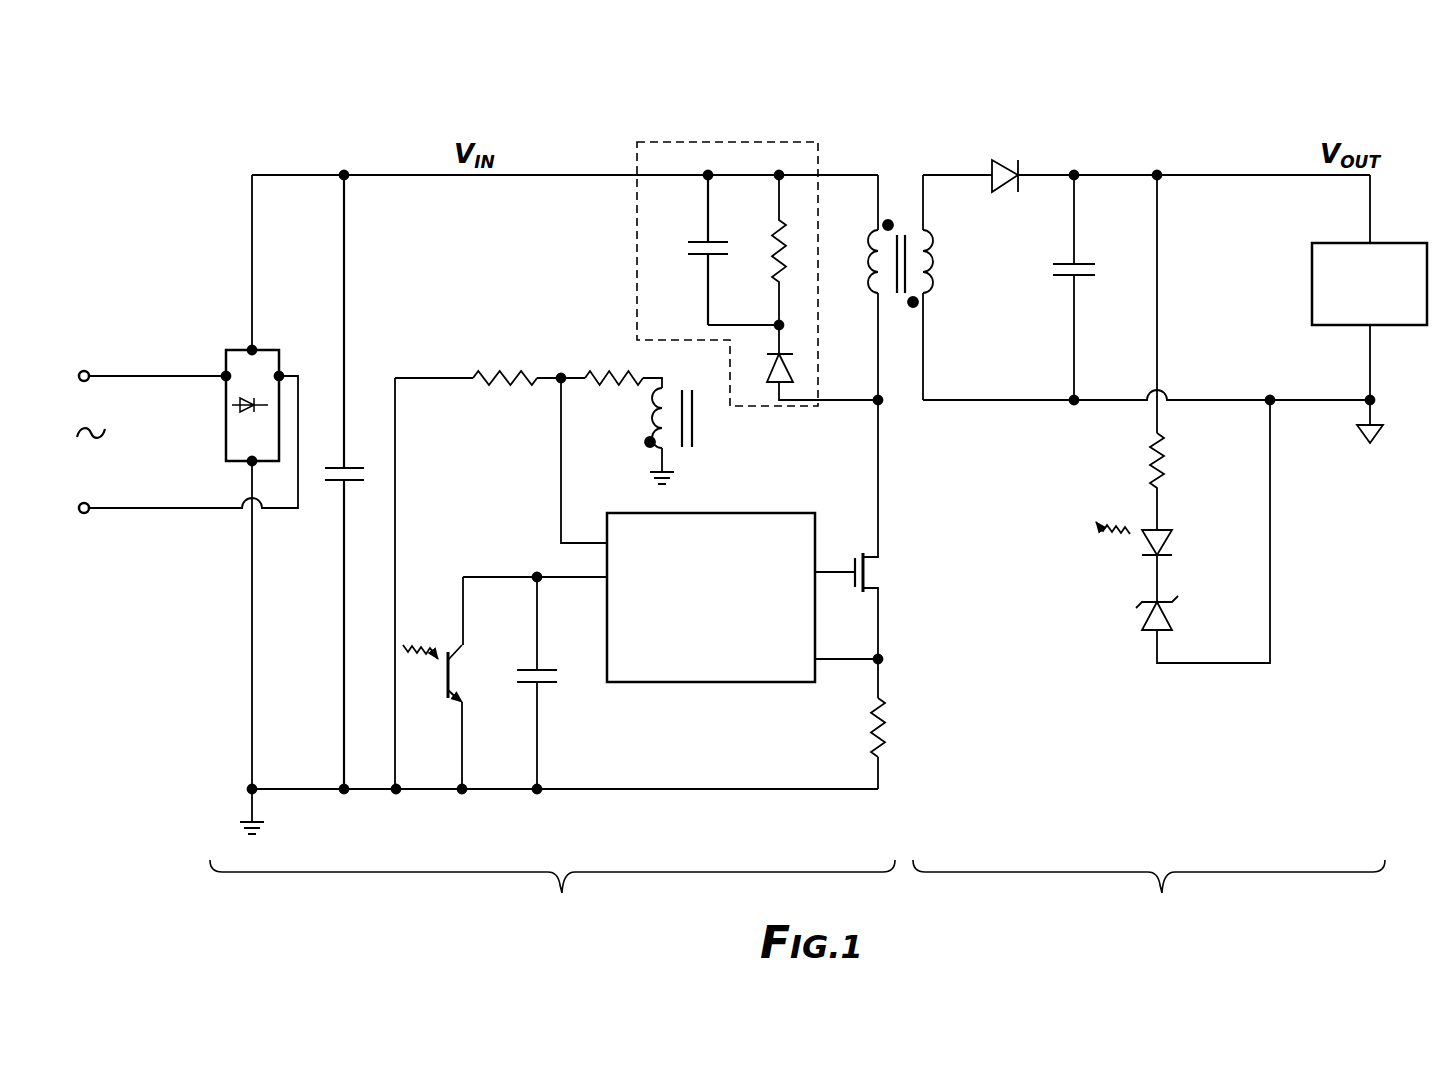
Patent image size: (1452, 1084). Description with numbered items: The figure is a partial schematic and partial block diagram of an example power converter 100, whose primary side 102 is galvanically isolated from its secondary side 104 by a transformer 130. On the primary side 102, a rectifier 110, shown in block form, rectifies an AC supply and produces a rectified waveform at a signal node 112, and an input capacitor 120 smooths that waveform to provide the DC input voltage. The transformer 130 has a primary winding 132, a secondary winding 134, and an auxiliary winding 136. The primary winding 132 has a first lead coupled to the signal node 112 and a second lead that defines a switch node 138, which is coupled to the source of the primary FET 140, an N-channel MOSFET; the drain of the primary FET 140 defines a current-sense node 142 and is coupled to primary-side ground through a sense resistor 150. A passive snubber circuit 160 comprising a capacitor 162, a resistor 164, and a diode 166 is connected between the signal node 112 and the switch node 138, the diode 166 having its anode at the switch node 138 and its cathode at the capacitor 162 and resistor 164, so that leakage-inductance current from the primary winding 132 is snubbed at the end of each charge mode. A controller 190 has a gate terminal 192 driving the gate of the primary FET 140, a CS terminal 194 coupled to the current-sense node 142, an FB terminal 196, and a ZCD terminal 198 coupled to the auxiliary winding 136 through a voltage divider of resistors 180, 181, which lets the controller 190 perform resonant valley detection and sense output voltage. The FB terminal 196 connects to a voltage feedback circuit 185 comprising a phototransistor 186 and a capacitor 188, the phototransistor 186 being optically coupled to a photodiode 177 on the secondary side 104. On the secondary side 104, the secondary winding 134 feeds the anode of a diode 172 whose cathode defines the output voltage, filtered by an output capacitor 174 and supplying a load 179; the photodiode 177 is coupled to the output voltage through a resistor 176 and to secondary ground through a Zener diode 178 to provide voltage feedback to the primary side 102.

The power converter 100 is at (159, 101).
The primary side 102 is at (552, 889).
The secondary side 104 is at (1149, 893).
The rectifier 110 is at (215, 342).
The signal node 112 is at (252, 350).
The input capacitor 120 is at (334, 492).
The transformer 130 is at (927, 204).
The primary winding 132 is at (873, 248).
The secondary winding 134 is at (932, 262).
The auxiliary winding 136 is at (641, 420).
The switch node 138 is at (876, 402).
The primary FET 140 is at (854, 559).
The current-sense node 142 is at (880, 661).
The sense resistor 150 is at (872, 741).
The snubber circuit 160 is at (757, 256).
The capacitor 162 is at (703, 242).
The resistor 164 is at (776, 273).
The diode 166 is at (770, 398).
The diode 172 is at (1005, 166).
The output capacitor 174 is at (1067, 263).
The resistor 176 is at (1152, 452).
The photodiode 177 is at (1147, 540).
The Zener diode 178 is at (1140, 620).
The load 179 is at (1312, 262).
The resistor 180 is at (473, 378).
The resistor 181 is at (603, 371).
The voltage feedback circuit 185 is at (532, 556).
The phototransistor 186 is at (449, 642).
The capacitor 188 is at (546, 688).
The controller 190 is at (735, 658).
The gate terminal 192 is at (817, 578).
The CS terminal 194 is at (818, 662).
The FB terminal 196 is at (606, 579).
The ZCD terminal 198 is at (606, 545).